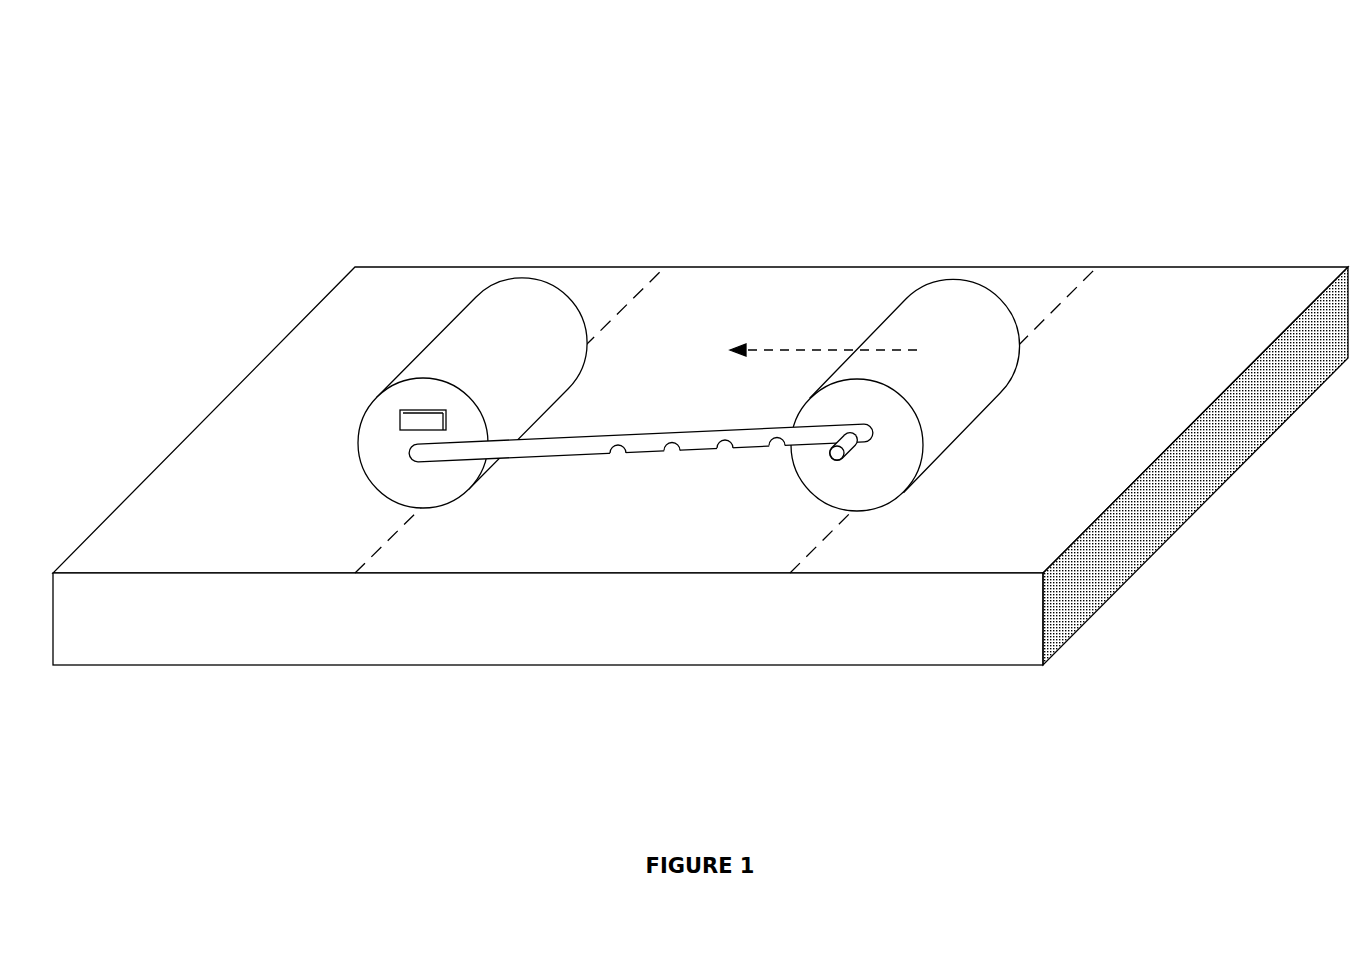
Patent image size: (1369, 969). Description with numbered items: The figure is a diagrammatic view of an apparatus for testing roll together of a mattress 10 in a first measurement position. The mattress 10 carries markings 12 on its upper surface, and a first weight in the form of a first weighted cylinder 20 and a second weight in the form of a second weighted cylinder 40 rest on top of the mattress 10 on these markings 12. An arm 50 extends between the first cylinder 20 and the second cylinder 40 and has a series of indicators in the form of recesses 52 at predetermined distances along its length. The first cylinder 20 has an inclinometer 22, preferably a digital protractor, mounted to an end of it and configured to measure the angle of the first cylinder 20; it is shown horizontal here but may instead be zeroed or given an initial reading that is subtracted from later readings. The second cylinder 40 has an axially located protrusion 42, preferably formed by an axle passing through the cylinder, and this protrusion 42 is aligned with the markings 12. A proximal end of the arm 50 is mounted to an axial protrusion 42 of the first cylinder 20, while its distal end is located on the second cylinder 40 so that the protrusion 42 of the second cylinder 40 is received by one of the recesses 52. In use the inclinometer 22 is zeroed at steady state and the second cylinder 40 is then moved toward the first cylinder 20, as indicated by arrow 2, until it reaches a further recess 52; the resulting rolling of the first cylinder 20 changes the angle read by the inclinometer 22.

The mattress 10 is at (232, 620).
The markings 12 is at (1072, 287).
The arrow 2 is at (787, 348).
The first weighted cylinder 20 is at (521, 303).
The inclinometer 22 is at (400, 413).
The second weighted cylinder 40 is at (943, 303).
The axially located protrusion 42 is at (841, 461).
The arm 50 is at (545, 452).
The recesses 52 is at (672, 456).